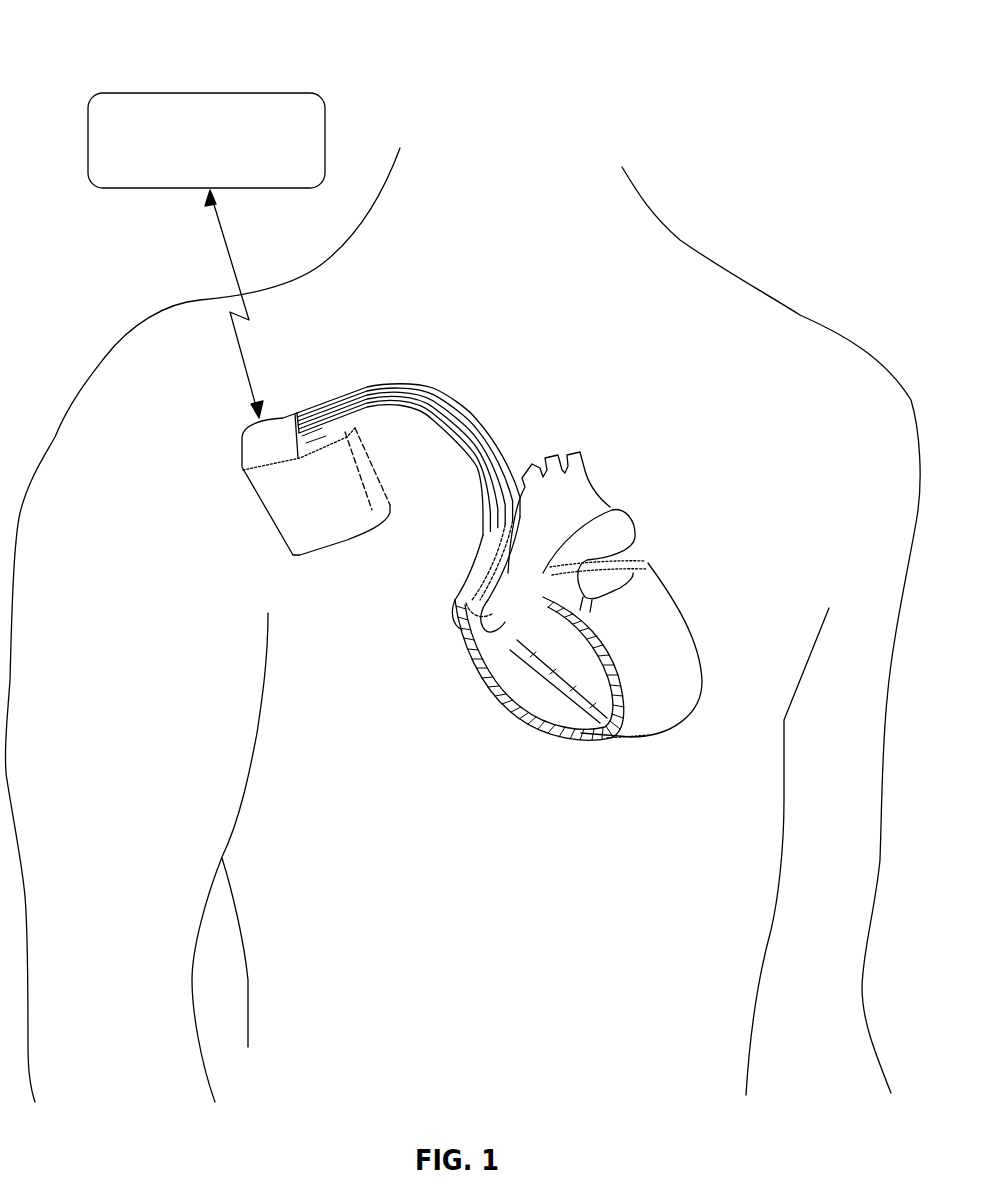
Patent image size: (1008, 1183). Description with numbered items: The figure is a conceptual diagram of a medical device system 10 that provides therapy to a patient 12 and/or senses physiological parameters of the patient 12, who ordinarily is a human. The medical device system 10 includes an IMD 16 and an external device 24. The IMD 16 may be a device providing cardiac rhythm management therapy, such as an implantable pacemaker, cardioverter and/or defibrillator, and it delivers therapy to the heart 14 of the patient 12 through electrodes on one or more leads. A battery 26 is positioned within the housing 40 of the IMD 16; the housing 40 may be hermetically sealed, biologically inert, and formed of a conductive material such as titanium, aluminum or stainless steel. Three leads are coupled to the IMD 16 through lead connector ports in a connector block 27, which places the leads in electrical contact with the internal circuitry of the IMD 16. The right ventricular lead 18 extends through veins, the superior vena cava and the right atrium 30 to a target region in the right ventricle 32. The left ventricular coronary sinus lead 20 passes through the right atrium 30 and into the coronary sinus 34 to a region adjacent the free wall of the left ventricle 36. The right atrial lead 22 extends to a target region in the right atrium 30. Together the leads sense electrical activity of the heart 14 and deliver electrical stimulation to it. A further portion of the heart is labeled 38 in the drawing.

The medical device system 10 is at (600, 72).
The patient 12 is at (777, 298).
The heart 14 is at (566, 617).
The IMD 16 is at (286, 508).
The right ventricular lead 18 is at (462, 410).
The left ventricular coronary sinus lead 20 is at (512, 438).
The right atrial lead 22 is at (440, 422).
The external device 24 is at (196, 177).
The battery 26 is at (302, 522).
The connector block 27 is at (242, 458).
The right atrium 30 is at (473, 610).
The right ventricle 32 is at (522, 688).
The coronary sinus 34 is at (528, 573).
The left ventricle 36 is at (675, 660).
The aorta 38 is at (592, 497).
The housing 40 is at (362, 530).